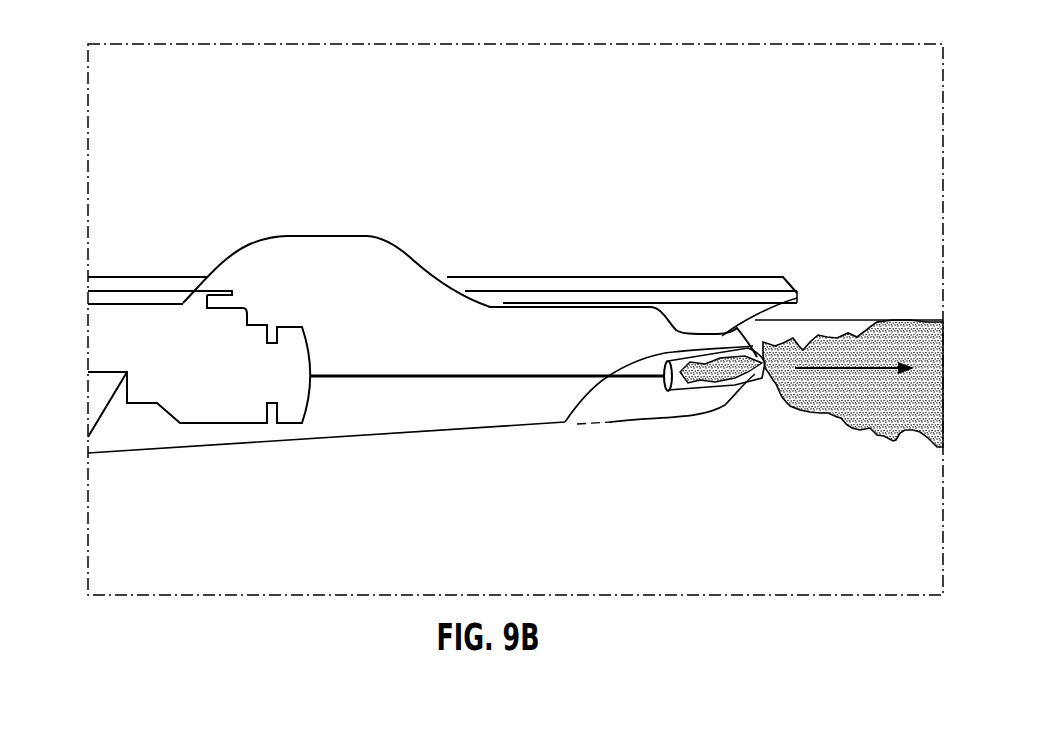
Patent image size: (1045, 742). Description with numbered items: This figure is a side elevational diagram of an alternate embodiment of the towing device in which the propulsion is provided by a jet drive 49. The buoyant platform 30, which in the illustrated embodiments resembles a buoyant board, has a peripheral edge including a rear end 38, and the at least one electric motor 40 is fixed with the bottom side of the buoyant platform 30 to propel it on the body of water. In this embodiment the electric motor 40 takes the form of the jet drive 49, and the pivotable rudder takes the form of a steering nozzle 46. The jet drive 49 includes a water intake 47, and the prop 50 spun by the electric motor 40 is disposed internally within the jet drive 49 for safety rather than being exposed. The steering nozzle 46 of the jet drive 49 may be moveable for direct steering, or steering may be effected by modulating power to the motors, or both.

The buoyant platform 30 is at (368, 236).
The rear end 38 is at (742, 278).
The electric motor 40 is at (157, 353).
The steering nozzle 46 is at (767, 334).
The water intake 47 is at (575, 424).
The jet drive 49 is at (440, 433).
The prop 50 is at (673, 397).